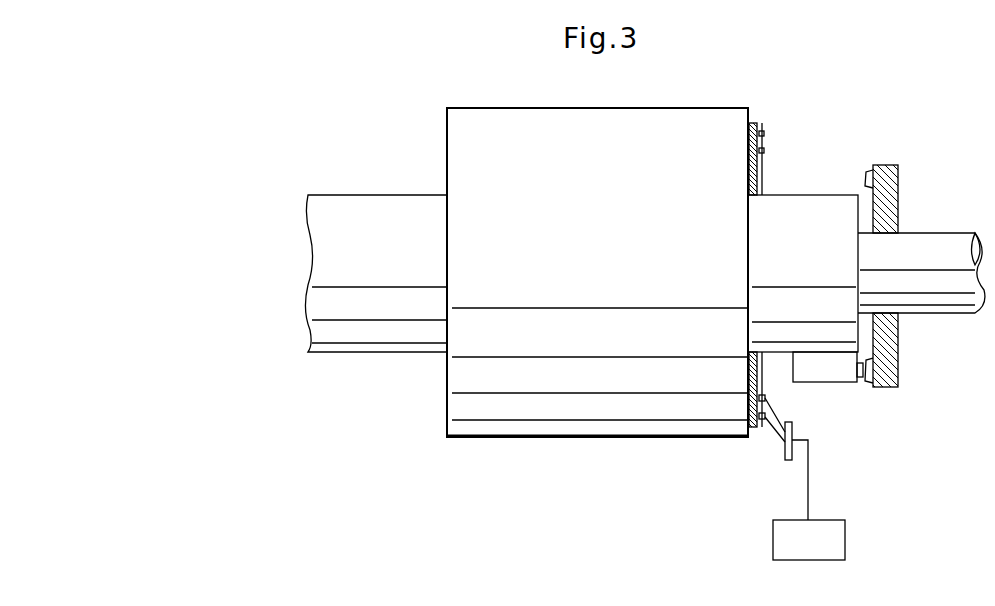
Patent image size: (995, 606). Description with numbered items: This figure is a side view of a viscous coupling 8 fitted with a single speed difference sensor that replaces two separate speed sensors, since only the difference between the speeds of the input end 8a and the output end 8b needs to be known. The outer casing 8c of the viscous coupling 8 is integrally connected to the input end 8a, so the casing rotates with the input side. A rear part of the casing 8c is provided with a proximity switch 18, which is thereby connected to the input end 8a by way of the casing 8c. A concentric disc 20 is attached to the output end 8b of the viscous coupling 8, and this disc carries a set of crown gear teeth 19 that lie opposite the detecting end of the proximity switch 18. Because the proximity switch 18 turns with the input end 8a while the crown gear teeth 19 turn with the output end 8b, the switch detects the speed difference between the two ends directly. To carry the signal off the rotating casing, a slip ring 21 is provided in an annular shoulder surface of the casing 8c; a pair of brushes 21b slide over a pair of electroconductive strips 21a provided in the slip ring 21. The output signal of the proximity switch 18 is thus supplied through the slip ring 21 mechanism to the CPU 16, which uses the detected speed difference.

The viscous coupling 8 is at (737, 104).
The input end 8a is at (360, 195).
The output end 8b is at (967, 233).
The outer casing 8c is at (612, 108).
The CPU 16 is at (847, 553).
The proximity switch 18 is at (820, 383).
The crown gear teeth 19 is at (868, 384).
The concentric disc 20 is at (898, 378).
The slip ring 21 is at (761, 432).
The electroconductive strips 21a is at (766, 150).
The brushes 21b is at (783, 425).